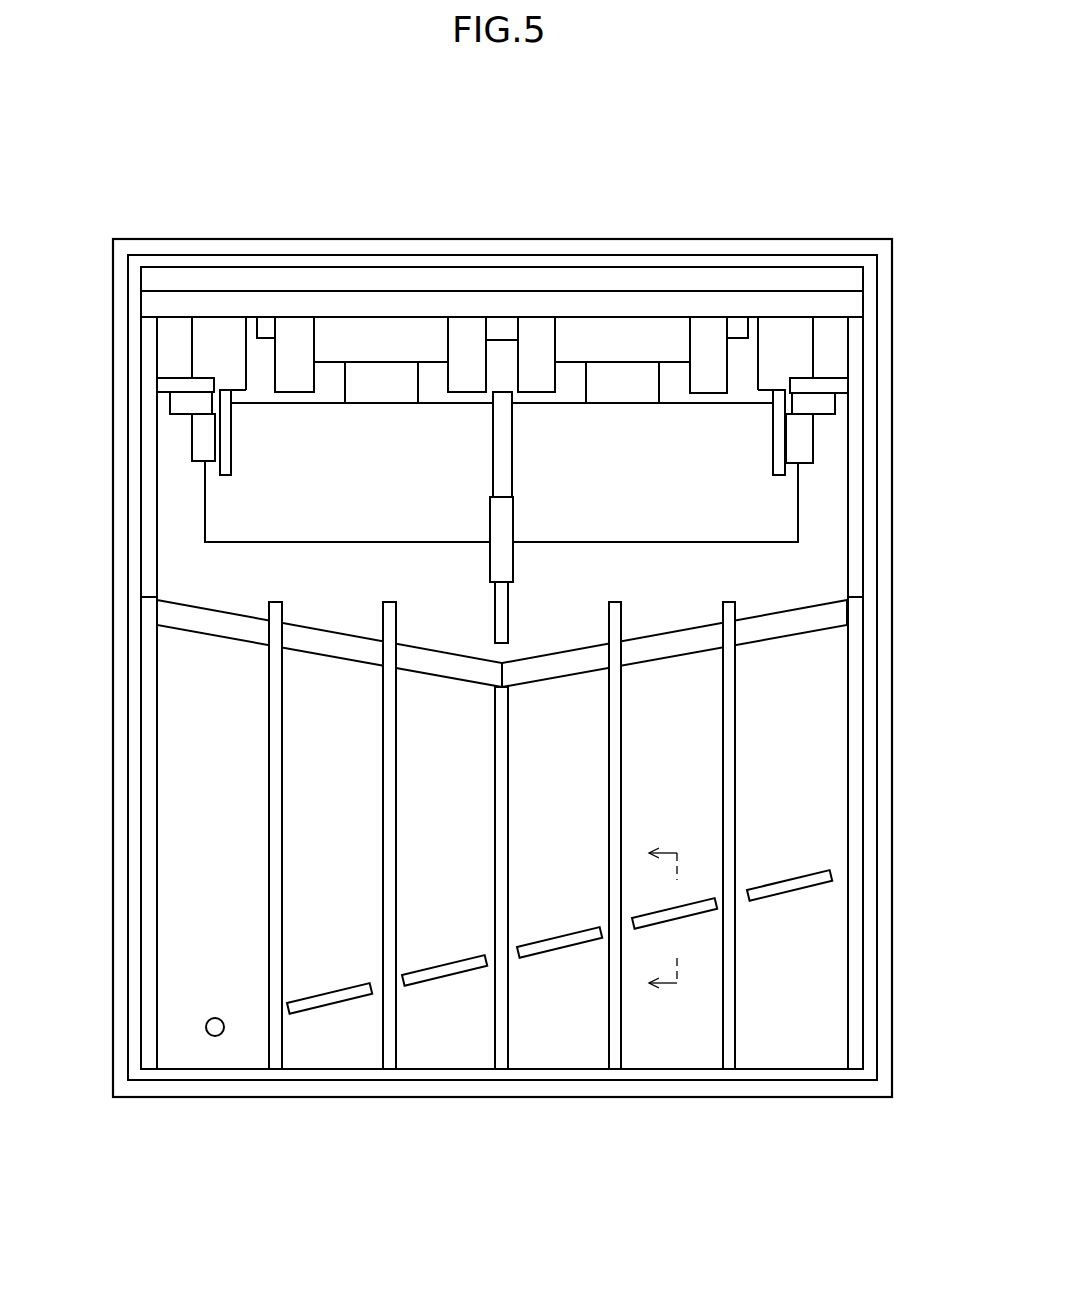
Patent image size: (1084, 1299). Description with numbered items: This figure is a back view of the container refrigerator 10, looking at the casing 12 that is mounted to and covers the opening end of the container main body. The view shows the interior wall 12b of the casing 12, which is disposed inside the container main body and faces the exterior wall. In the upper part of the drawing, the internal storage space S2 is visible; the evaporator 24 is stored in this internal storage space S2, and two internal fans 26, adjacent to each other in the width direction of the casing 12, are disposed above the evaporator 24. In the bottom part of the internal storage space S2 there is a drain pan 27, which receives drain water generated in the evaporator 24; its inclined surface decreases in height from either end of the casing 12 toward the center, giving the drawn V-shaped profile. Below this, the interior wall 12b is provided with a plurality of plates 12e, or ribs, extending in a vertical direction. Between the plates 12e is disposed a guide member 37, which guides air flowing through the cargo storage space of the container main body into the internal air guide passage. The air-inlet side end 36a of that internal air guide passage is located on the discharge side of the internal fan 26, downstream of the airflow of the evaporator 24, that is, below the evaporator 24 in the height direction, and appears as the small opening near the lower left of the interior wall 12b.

The apparatus 10 is at (195, 203).
The casing 12 is at (770, 1097).
The interior wall 12b is at (182, 897).
The plates (ribs) 12e is at (282, 1047).
The evaporator 24 is at (248, 512).
The internal fans 26 is at (373, 335).
The drain pan 27 is at (818, 615).
The air-inlet side end of the internal air guide passage 36a is at (205, 1025).
The guide member 37 is at (417, 978).
The internal storage space S2 is at (814, 508).